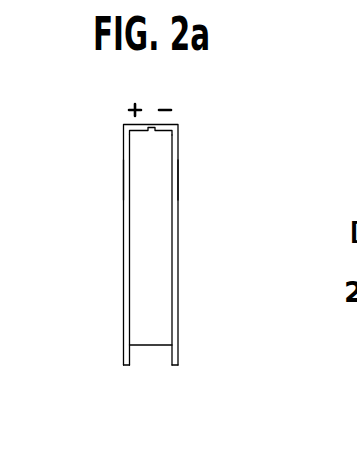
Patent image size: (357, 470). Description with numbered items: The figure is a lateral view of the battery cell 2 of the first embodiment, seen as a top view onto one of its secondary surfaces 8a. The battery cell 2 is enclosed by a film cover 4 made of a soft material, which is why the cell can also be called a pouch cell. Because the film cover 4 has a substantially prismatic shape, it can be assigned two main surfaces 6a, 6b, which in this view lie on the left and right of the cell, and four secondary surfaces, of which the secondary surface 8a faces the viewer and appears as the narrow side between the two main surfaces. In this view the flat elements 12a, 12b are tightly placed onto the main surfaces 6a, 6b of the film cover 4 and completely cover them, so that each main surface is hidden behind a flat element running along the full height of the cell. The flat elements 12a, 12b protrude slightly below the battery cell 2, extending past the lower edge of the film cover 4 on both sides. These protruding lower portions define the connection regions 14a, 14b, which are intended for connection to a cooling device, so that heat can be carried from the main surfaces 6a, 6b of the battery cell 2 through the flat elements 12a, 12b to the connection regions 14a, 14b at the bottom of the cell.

The battery cell 2 is at (189, 131).
The film cover 4 is at (141, 155).
The main surface 6a is at (120, 180).
The main surface 6b is at (184, 180).
The flat element 12a is at (124, 240).
The flat element 12b is at (178, 247).
The secondary surface 8a is at (142, 303).
The connection region 14a is at (123, 356).
The connection region 14b is at (178, 356).